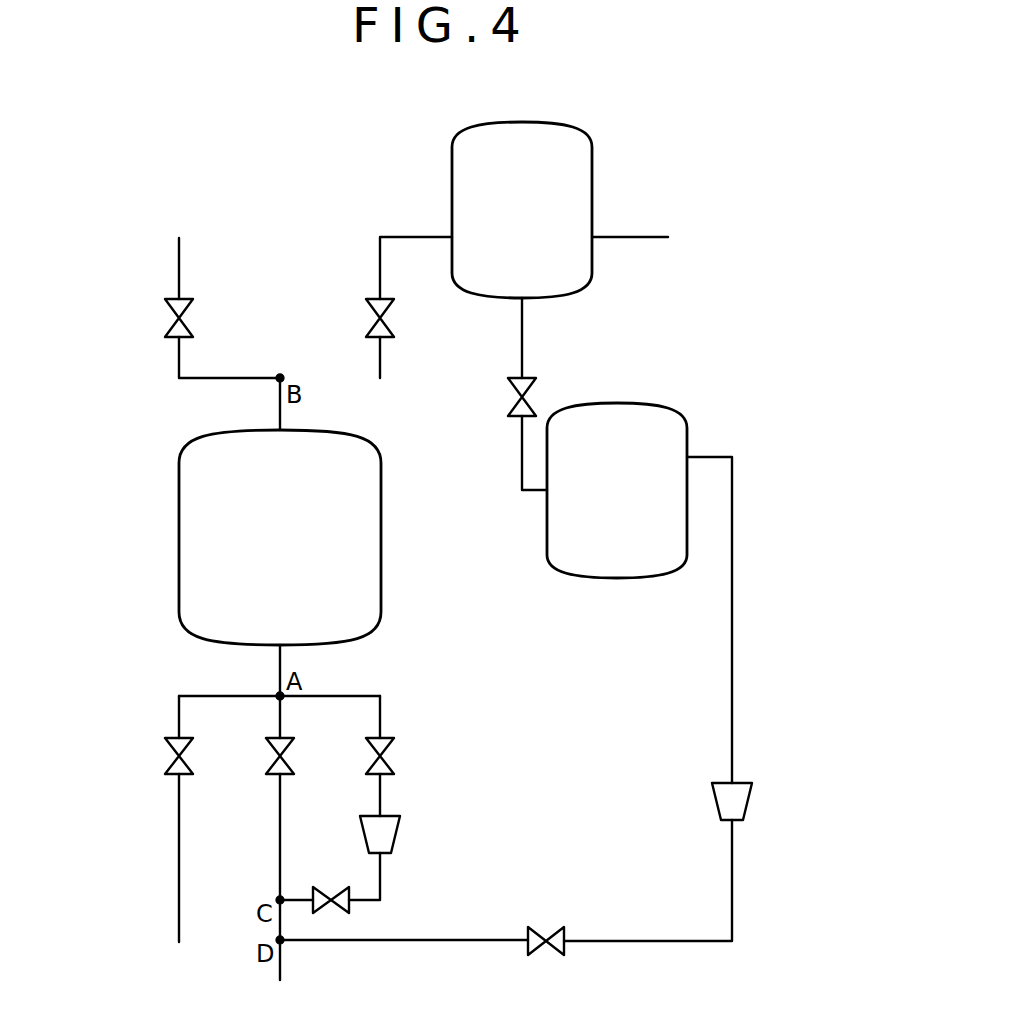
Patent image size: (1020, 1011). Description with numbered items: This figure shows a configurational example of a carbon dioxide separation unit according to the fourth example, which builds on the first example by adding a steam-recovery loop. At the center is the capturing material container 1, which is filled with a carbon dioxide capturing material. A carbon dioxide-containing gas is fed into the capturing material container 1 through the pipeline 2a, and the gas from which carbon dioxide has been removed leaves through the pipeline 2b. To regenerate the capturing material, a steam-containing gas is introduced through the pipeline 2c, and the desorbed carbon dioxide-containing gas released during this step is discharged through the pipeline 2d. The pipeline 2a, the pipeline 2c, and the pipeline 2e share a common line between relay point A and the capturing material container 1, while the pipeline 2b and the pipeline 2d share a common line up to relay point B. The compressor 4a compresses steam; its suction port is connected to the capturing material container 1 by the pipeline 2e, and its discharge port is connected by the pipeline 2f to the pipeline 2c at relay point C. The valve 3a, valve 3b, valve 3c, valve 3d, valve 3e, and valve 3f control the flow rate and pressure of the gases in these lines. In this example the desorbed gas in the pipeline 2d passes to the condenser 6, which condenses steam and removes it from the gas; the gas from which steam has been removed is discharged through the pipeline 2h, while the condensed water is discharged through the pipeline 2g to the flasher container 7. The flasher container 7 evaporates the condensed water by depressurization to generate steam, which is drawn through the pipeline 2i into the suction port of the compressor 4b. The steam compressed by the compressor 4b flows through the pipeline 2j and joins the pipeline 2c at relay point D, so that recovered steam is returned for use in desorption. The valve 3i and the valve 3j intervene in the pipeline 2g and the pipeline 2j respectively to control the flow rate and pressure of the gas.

The capturing material container 1 is at (179, 527).
The condenser 6 is at (592, 170).
The flasher container 7 is at (683, 415).
The pipeline 2a is at (179, 826).
The pipeline 2b is at (179, 262).
The pipeline 2c is at (280, 826).
The pipeline 2d is at (380, 262).
The pipeline 2e is at (381, 712).
The pipeline 2f is at (381, 900).
The pipeline 2g is at (522, 336).
The pipeline 2h is at (626, 236).
The pipeline 2i is at (732, 622).
The pipeline 2j is at (732, 866).
The valve 3a is at (174, 744).
The valve 3b is at (276, 744).
The valve 3c is at (374, 744).
The valve 3d is at (174, 306).
The valve 3e is at (374, 306).
The valve 3f is at (331, 914).
The valve 3i is at (515, 386).
The valve 3j is at (546, 927).
The compressor 4a is at (397, 835).
The compressor 4b is at (714, 800).